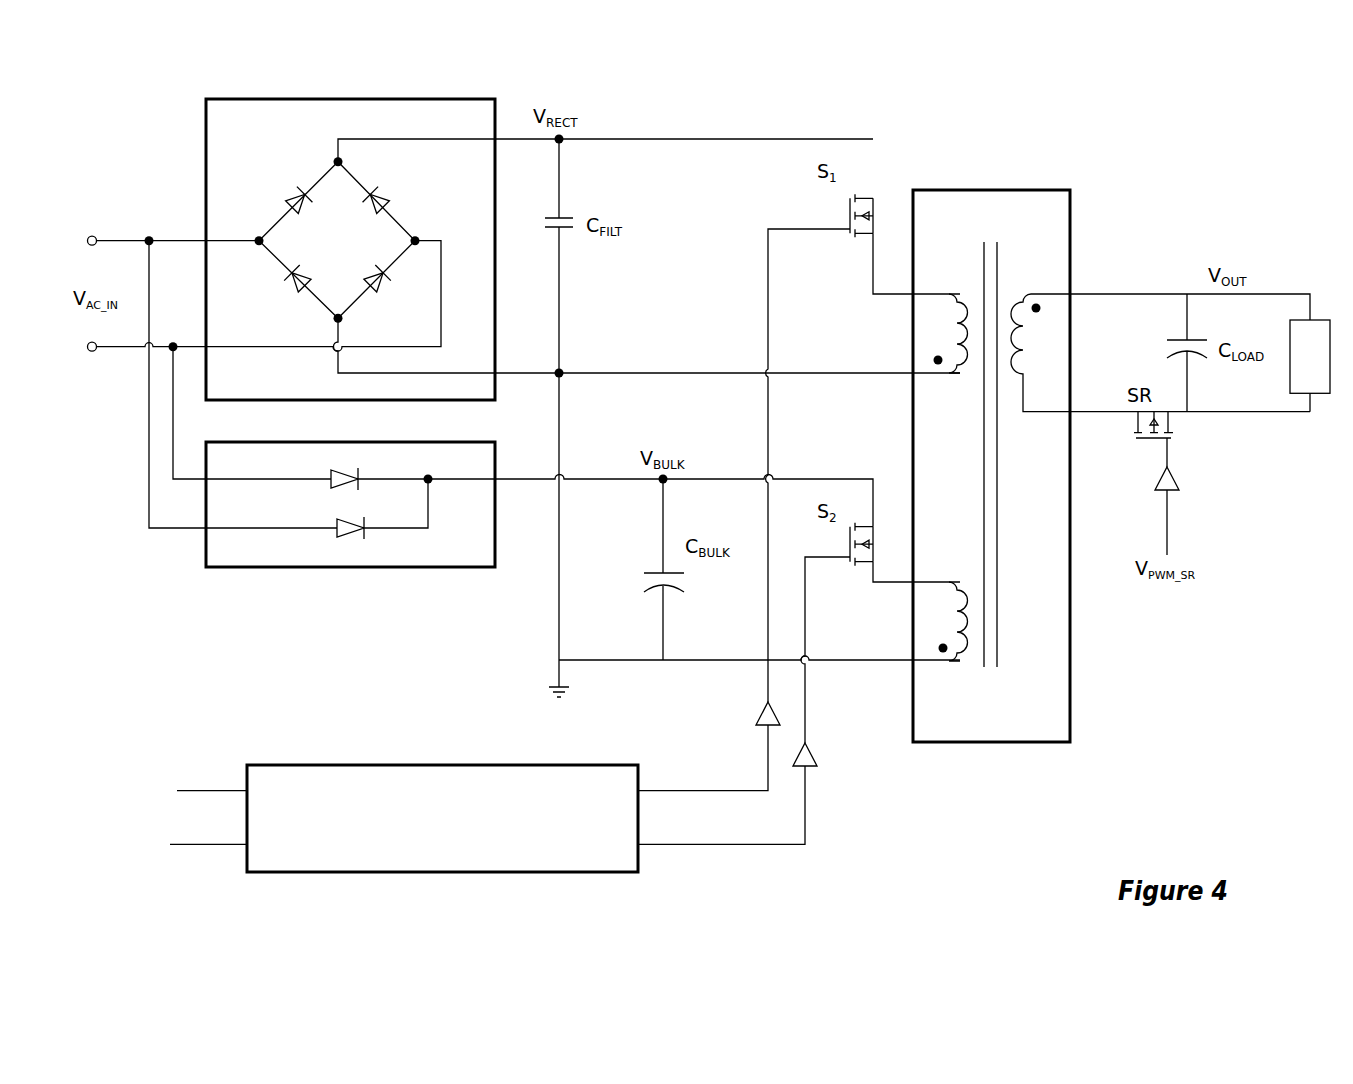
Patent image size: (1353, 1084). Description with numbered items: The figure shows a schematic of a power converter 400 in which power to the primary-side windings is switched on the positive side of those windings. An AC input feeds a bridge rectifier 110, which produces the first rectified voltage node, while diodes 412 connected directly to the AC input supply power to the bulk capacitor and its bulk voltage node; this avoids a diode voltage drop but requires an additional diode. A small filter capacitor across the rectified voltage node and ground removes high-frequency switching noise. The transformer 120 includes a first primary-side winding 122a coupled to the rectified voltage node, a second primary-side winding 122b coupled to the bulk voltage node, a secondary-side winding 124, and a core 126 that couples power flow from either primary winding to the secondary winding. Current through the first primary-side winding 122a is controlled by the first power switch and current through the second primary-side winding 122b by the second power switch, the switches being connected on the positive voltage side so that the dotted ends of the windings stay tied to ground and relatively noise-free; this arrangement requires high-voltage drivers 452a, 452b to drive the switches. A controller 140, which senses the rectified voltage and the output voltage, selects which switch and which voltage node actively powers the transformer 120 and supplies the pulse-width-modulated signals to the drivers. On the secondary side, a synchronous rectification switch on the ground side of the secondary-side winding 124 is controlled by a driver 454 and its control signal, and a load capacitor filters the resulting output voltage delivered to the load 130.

The bridge rectifier 110 is at (583, 234).
The diodes 412 is at (539, 490).
The transformer 120 is at (1111, 450).
The first primary-side winding 122a is at (954, 318).
The second primary-side winding 122b is at (950, 606).
The secondary-side winding 124 is at (1160, 337).
The transformer core 126 is at (999, 472).
The load 130 is at (1321, 333).
The controller 140 is at (425, 804).
The power converter 400 is at (1235, 116).
The high-voltage driver 452a is at (709, 737).
The high-voltage driver 452b is at (754, 786).
The driver 454 is at (1187, 508).